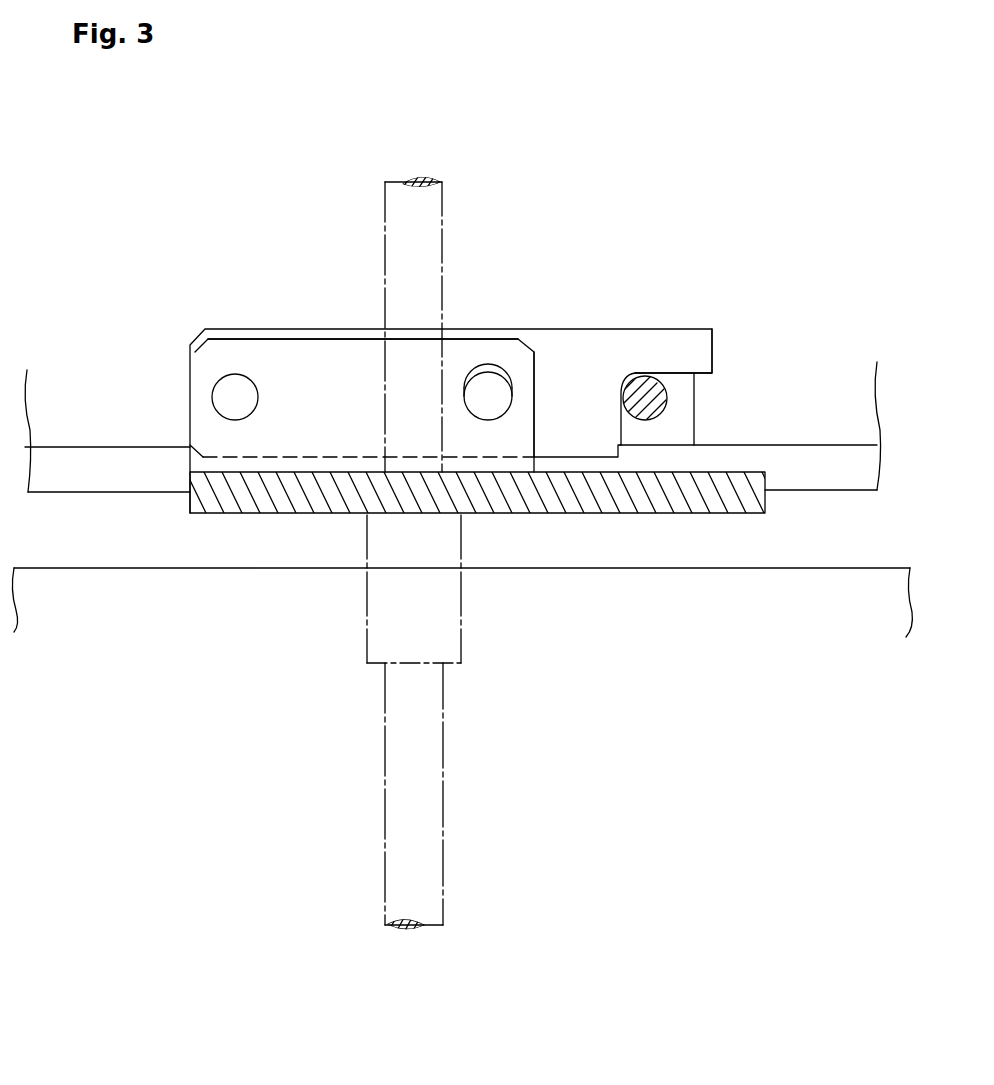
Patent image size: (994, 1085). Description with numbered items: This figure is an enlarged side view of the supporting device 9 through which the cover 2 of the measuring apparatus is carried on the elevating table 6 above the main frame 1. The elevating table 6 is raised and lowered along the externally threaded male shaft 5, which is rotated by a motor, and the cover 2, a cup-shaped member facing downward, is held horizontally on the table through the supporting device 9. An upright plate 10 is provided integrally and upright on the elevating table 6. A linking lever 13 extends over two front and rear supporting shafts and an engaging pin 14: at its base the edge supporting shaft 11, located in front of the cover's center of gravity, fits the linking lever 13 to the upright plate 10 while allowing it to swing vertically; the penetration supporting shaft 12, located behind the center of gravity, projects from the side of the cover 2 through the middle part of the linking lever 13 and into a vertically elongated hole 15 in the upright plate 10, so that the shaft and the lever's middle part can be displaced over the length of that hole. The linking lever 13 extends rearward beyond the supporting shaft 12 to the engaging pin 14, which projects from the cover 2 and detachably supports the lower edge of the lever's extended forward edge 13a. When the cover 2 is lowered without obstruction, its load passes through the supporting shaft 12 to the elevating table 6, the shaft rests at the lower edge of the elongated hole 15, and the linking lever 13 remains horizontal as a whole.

The main frame 1 is at (103, 585).
The cover 2 is at (88, 458).
The male shaft 5 is at (443, 800).
The elevating table 6 is at (592, 498).
The supporting device 9 is at (278, 320).
The upright plate 10 is at (327, 368).
The edge supporting shaft 11 is at (214, 395).
The penetration supporting shaft 12 is at (513, 392).
The linking lever 13 is at (603, 347).
The extended forward edge 13a is at (697, 350).
The engaging pin 14 is at (667, 398).
The elongated hole 15 is at (488, 360).